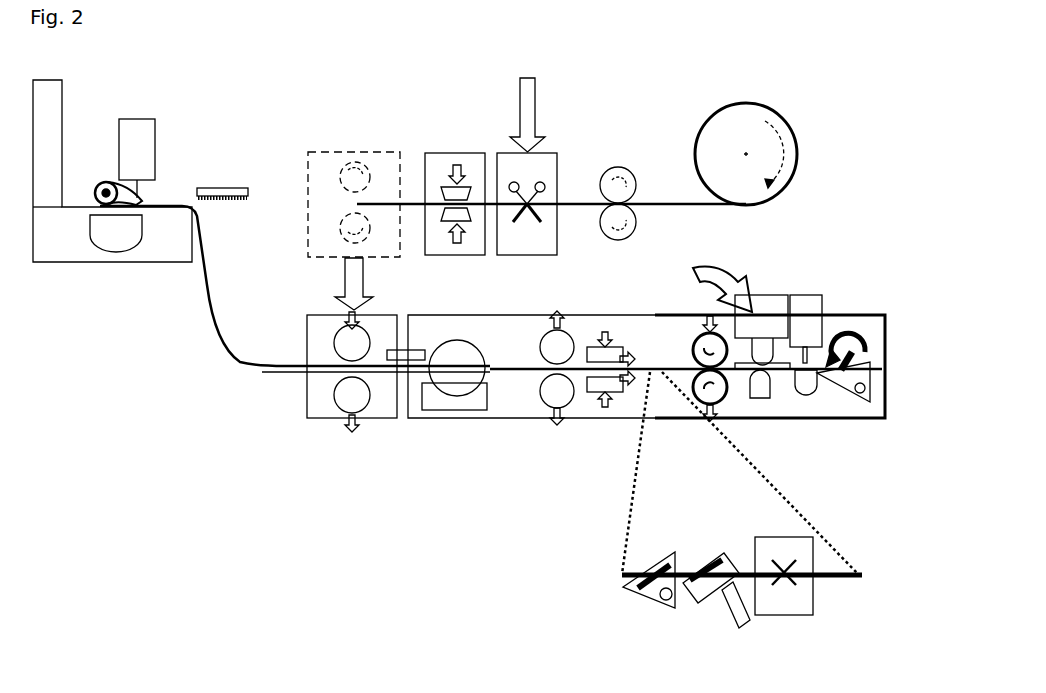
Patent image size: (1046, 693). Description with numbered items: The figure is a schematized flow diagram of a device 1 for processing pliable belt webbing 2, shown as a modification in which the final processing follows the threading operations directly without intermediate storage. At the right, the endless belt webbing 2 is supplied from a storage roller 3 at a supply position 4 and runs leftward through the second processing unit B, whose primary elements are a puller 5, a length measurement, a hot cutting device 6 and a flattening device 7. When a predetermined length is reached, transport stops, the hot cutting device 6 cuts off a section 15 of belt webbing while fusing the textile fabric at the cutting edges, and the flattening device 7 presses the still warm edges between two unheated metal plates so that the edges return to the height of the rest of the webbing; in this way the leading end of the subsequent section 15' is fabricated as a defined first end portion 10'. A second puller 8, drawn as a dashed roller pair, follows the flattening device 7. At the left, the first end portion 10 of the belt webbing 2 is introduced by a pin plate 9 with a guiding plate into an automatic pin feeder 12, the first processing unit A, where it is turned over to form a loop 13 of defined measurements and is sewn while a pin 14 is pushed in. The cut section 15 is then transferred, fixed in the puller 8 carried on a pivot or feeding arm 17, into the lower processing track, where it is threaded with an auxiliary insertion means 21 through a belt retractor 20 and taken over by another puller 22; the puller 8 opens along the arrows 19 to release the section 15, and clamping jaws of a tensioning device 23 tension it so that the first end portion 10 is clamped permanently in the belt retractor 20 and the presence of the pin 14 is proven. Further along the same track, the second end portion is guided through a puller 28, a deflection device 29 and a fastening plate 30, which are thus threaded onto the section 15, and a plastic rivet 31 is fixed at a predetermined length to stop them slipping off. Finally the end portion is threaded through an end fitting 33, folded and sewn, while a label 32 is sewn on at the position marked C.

The device 1 is at (850, 69).
The belt webbing 2 is at (725, 206).
The storage roller 3 is at (774, 118).
The unwinding station 4 is at (690, 116).
The puller 5 is at (632, 168).
The hot cutting device 6 is at (544, 153).
The flattening device 7 is at (461, 153).
The second puller 8 is at (358, 152).
The pin plate 9 is at (226, 188).
The first end portion 10 is at (295, 223).
The first end portion of subsequent section 10' is at (306, 249).
The automatic pin feeder 12 is at (78, 219).
The loop 13 is at (104, 182).
The pin 14 is at (100, 183).
The section of belt webbing 15 is at (327, 407).
The subsequent section of belt webbing 15' is at (551, 248).
The pivot or feeding arm 17 is at (346, 284).
The arrows 19 is at (348, 428).
The belt retractor 20 is at (452, 395).
The auxiliary insertion means 21 is at (399, 382).
The puller 22 is at (540, 410).
The tensioning device 23 is at (596, 400).
The puller 28 is at (725, 404).
The deflection device 29 is at (655, 603).
The fastening plate 30 is at (727, 612).
The plastic rivet 31 is at (786, 592).
The label 32 is at (772, 372).
The end fitting 33 is at (870, 402).
The first processing unit A is at (172, 108).
The second processing unit B is at (600, 112).
The label position c C is at (722, 288).